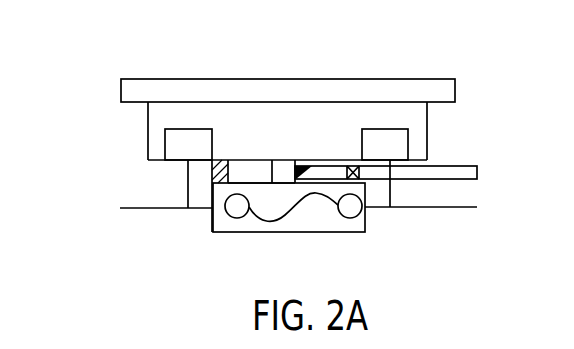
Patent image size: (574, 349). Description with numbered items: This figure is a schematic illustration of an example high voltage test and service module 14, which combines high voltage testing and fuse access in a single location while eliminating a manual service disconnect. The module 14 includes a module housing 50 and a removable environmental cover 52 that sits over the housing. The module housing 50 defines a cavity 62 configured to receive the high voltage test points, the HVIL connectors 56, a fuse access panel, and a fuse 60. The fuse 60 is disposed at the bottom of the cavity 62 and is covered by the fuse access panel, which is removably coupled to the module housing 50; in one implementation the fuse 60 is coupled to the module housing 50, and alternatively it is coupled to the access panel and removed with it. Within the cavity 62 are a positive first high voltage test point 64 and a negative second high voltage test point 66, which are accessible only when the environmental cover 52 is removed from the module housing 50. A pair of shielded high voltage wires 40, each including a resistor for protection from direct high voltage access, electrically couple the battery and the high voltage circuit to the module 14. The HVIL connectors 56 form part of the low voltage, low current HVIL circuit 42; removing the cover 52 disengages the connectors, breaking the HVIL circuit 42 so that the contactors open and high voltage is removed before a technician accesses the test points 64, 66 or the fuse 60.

The high voltage test and service (HVTS) module 14 is at (96, 80).
The removable environmental cover 52 is at (432, 78).
The module housing 50 is at (147, 143).
The cavity 62 is at (290, 124).
The negative second high voltage test point 66 is at (213, 143).
The positive first high voltage test point 64 is at (409, 143).
The HVIL connectors 56 is at (304, 166).
The low voltage, low current circuit 42 is at (465, 180).
The shielded high voltage cables or wires 40 is at (162, 208).
The fuse 60 is at (287, 234).